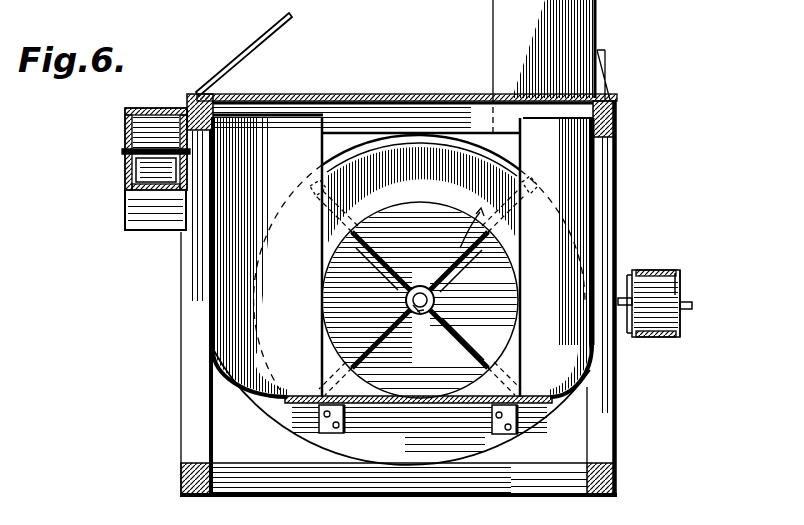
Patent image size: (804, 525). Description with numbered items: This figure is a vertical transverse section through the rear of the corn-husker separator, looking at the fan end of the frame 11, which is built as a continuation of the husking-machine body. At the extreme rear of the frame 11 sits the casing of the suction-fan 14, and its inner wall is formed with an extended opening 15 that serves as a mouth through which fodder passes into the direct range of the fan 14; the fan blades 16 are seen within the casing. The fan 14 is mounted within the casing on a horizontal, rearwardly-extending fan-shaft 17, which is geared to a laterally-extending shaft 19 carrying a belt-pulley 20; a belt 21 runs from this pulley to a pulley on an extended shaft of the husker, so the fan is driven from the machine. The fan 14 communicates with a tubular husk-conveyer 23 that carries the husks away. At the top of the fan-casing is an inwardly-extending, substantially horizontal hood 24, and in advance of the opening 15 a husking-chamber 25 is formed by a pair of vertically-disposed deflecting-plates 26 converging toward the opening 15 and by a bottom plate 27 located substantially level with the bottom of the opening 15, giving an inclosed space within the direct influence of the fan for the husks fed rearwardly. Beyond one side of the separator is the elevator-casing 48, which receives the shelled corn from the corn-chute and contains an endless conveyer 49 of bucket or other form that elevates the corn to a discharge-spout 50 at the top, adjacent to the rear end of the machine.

The frame 11 is at (180, 481).
The suction-fan 14 is at (516, 432).
The opening 15 is at (511, 258).
The agitator blade 16 is at (410, 262).
The fan-shaft 17 is at (421, 315).
The laterally-extending shaft 19 is at (694, 311).
The belt-pulley 20 is at (683, 290).
The belt 21 is at (649, 270).
The tubular husk-conveyer 23 is at (493, 28).
The hood 24 is at (350, 158).
The husking-chamber 25 is at (422, 196).
The deflecting-plates 26 is at (391, 256).
The bottom plate 27 is at (370, 407).
The elevator-casing 48 is at (150, 116).
The endless conveyer 49 is at (127, 136).
The discharge-spout 50 is at (126, 203).